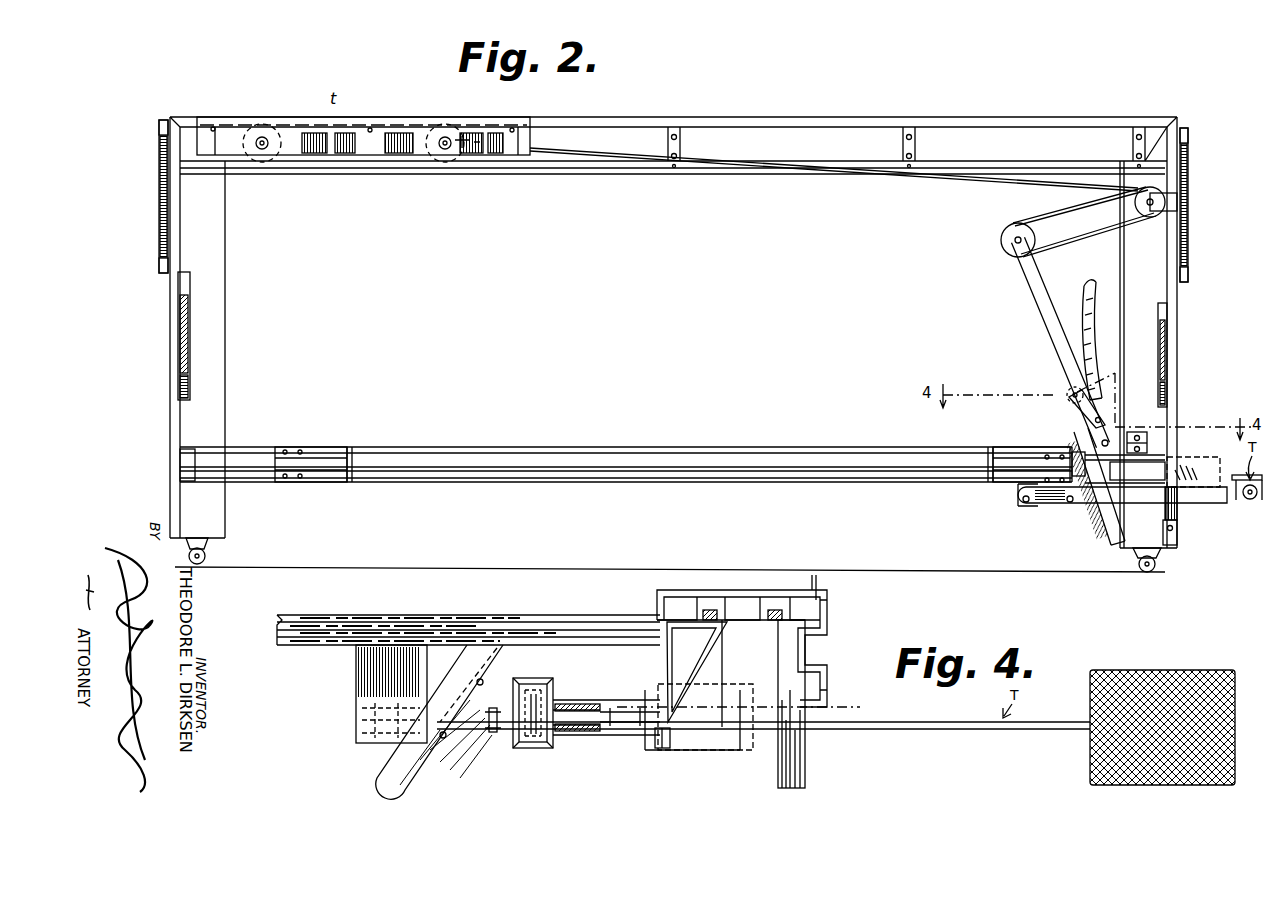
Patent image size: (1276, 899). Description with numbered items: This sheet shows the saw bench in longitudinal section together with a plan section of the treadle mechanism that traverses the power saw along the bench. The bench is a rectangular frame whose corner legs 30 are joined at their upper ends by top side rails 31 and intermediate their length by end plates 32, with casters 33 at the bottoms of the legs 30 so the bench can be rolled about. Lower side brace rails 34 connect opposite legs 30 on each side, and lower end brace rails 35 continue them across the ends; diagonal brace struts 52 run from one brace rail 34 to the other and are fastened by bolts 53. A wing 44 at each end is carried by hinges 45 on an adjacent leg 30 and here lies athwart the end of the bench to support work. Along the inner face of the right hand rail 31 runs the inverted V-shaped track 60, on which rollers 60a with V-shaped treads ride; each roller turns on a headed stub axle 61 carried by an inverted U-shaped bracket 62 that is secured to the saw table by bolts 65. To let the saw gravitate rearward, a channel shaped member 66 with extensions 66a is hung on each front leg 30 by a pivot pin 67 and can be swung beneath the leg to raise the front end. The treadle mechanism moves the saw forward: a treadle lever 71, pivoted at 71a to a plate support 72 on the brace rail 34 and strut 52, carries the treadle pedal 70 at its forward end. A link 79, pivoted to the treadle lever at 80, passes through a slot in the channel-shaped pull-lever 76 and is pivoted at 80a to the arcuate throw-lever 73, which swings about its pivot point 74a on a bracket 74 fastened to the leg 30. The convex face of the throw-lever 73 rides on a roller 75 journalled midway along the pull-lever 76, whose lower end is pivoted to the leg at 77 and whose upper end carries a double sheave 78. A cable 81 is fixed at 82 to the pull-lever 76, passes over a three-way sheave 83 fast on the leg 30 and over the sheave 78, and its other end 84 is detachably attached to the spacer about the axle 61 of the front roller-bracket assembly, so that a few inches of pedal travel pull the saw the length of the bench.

In FIG. 2, the corner standards or legs 30 is at (226, 302).
In FIG. 4, the corner standards or legs 30 is at (828, 612).
In FIG. 2, the top side rails 31 is at (938, 124).
In FIG. 2, the end plates 32 is at (178, 350).
In FIG. 2, the casters 33 is at (1156, 566).
In FIG. 2, the lower side brace rails 34 is at (772, 452).
In FIG. 4, the lower side brace rails 34 is at (462, 616).
In FIG. 2, the lower end brace rails 35 is at (180, 463).
In FIG. 4, the lower end brace rails 35 is at (806, 750).
In FIG. 2, the wing 44 is at (159, 212).
In FIG. 2, the hinges 45 is at (159, 128).
In FIG. 2, the diagonal brace struts 52 is at (352, 448).
In FIG. 4, the diagonal brace struts 52 is at (434, 706).
In FIG. 2, the bolts 53 is at (300, 449).
In FIG. 2, the track 60 is at (543, 169).
In FIG. 2, the rollers 60a is at (262, 162).
In FIG. 2, the headed stub axle 61 is at (262, 137).
In FIG. 2, the inverted U-shaped bracket 62 is at (532, 140).
In FIG. 2, the bolts 65 is at (213, 127).
In FIG. 2, the channel shaped member 66 is at (1217, 462).
In FIG. 4, the channel shaped member 66 is at (680, 590).
In FIG. 2, the extensions 66a is at (1178, 513).
In FIG. 4, the extensions 66a is at (828, 598).
In FIG. 2, the pivot pin 67 is at (1173, 531).
In FIG. 4, the pivot pin 67 is at (815, 577).
In FIG. 2, the treadle pedal 70 is at (1250, 500).
In FIG. 4, the treadle pedal 70 is at (1090, 770).
In FIG. 2, the treadle lever 71 is at (1088, 504).
In FIG. 4, the treadle lever 71 is at (465, 731).
In FIG. 2, the pivot 71a is at (1026, 504).
In FIG. 4, the pivot 71a is at (375, 740).
In FIG. 2, the plate support 72 is at (1013, 500).
In FIG. 4, the plate support 72 is at (356, 688).
In FIG. 2, the arcuate throw-lever 73 is at (1089, 283).
In FIG. 4, the arcuate throw-lever 73 is at (630, 700).
In FIG. 2, the bracket 74 is at (1150, 440).
In FIG. 4, the bracket 74 is at (674, 637).
In FIG. 2, the pivot point 74a is at (1137, 471).
In FIG. 4, the pivot point 74a is at (675, 672).
In FIG. 2, the roller 75 is at (1067, 394).
In FIG. 4, the roller 75 is at (532, 694).
In FIG. 2, the pull-lever 76 is at (1038, 292).
In FIG. 4, the pull-lever 76 is at (520, 680).
In FIG. 2, the pivot 77 is at (1114, 546).
In FIG. 4, the pivot 77 is at (671, 736).
In FIG. 2, the double sheave 78 is at (1000, 238).
In FIG. 2, the link 79 is at (1080, 455).
In FIG. 4, the link 79 is at (572, 700).
In FIG. 2, the pivot 80 is at (1068, 504).
In FIG. 4, the pivot 80 is at (491, 709).
In FIG. 2, the pivot 80a is at (1102, 421).
In FIG. 4, the pivot 80a is at (600, 712).
In FIG. 2, the cable 81 is at (630, 160).
In FIG. 2, the cable end connection 82 is at (1013, 265).
In FIG. 2, the three-way sheave 83 is at (1134, 207).
In FIG. 2, the cable end 84 is at (461, 163).